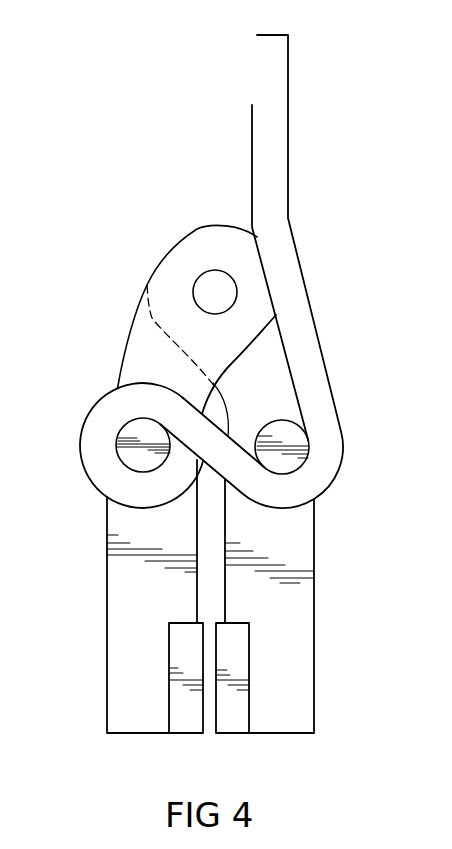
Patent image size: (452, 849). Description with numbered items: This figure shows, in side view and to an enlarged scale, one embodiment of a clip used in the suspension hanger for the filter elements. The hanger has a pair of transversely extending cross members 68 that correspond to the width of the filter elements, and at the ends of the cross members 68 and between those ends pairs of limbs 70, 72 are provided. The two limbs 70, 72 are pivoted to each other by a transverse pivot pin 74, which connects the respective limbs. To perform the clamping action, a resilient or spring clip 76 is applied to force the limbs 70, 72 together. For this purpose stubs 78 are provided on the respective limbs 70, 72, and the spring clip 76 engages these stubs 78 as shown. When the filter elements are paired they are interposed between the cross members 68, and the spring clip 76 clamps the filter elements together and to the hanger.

The cross members 68 is at (232, 718).
The limb 70 is at (127, 563).
The limb 72 is at (283, 593).
The transverse pivot pin 74 is at (213, 288).
The spring clip 76 is at (296, 324).
The stubs 78 is at (160, 456).